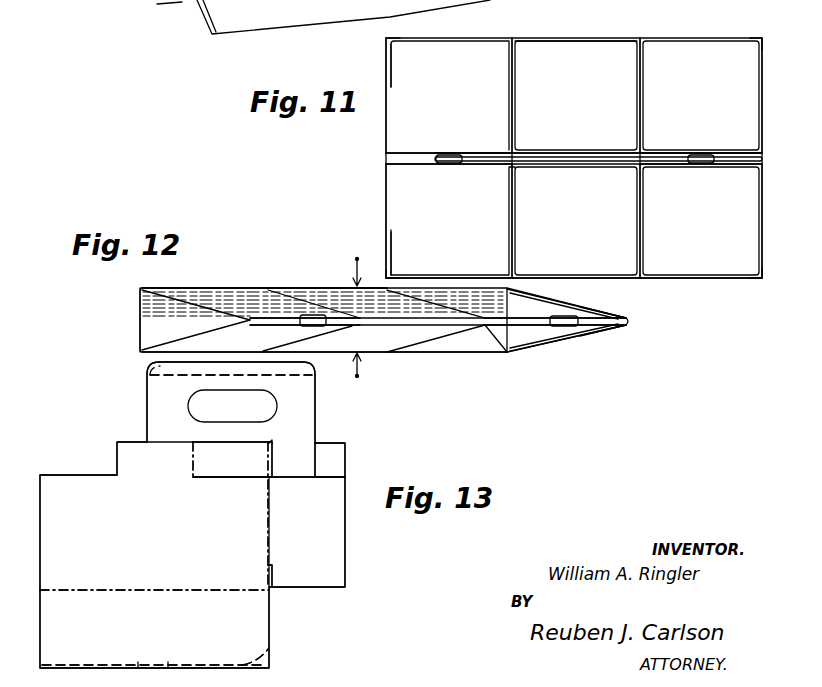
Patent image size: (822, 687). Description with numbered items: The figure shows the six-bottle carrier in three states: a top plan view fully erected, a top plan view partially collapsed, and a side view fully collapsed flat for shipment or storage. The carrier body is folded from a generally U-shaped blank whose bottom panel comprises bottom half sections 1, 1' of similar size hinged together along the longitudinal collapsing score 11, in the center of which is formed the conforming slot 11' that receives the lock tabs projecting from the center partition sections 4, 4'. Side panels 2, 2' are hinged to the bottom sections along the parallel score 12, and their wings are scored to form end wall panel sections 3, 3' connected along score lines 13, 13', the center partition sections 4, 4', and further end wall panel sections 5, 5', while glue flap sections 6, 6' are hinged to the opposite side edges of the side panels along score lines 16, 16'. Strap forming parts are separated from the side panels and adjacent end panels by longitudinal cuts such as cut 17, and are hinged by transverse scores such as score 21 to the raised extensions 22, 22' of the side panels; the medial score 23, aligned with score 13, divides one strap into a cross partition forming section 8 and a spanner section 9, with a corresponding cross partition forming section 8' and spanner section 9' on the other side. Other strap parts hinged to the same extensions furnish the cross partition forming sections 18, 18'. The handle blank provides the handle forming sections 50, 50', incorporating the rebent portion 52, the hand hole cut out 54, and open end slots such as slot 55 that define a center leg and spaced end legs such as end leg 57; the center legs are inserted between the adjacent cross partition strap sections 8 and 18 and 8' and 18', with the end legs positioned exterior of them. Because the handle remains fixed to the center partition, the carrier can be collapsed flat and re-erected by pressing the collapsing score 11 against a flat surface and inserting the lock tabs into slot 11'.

In FIG. 11, the bottom half section 1 is at (574, 276).
In FIG. 12, the bottom half section 1 is at (447, 367).
In FIG. 13, the bottom half section 1 is at (154, 629).
In FIG. 11, the bottom half section 1' is at (576, 78).
In FIG. 12, the bottom half section 1' is at (264, 275).
In FIG. 11, the side panel 2 is at (575, 221).
In FIG. 12, the side panel 2 is at (324, 354).
In FIG. 13, the side panel 2 is at (154, 532).
In FIG. 11, the side panel 2' is at (575, 79).
In FIG. 12, the side panel 2' is at (205, 276).
In FIG. 11, the end wall panel section 3 is at (770, 221).
In FIG. 12, the end wall panel section 3 is at (566, 350).
In FIG. 13, the end wall panel section 3 is at (307, 532).
In FIG. 11, the end wall panel section 3' is at (772, 95).
In FIG. 12, the end wall panel section 3' is at (566, 303).
In FIG. 11, the center partition section 4 is at (449, 178).
In FIG. 12, the center partition section 4 is at (304, 335).
In FIG. 11, the center partition section 4' is at (449, 138).
In FIG. 12, the center partition section 4' is at (305, 291).
In FIG. 11, the end wall panel section 5 is at (371, 221).
In FIG. 12, the end wall panel section 5 is at (147, 336).
In FIG. 11, the end wall panel section 5' is at (372, 95).
In FIG. 12, the end wall panel section 5' is at (126, 304).
In FIG. 11, the glue flap section 6 is at (406, 252).
In FIG. 12, the glue flap section 6 is at (196, 335).
In FIG. 11, the glue flap section 6' is at (408, 65).
In FIG. 12, the glue flap section 6' is at (196, 292).
In FIG. 11, the cross partition forming section 8 is at (653, 221).
In FIG. 12, the cross partition forming section 8 is at (436, 357).
In FIG. 13, the cross partition forming section 8 is at (232, 452).
In FIG. 11, the cross partition forming section 8' is at (657, 95).
In FIG. 12, the cross partition forming section 8' is at (423, 291).
In FIG. 11, the spanner section 9 is at (701, 179).
In FIG. 12, the spanner section 9 is at (603, 343).
In FIG. 13, the spanner section 9 is at (343, 460).
In FIG. 11, the spanner section 9' is at (701, 135).
In FIG. 12, the spanner section 9' is at (606, 308).
In FIG. 13, the collapsing score 11 is at (274, 650).
In FIG. 13, the slot 11' is at (154, 652).
In FIG. 13, the score 12 is at (101, 590).
In FIG. 11, the score line 13 is at (761, 291).
In FIG. 13, the score line 13 is at (284, 587).
In FIG. 11, the score line 13' is at (762, 29).
In FIG. 11, the score line 16 is at (402, 264).
In FIG. 11, the score line 16' is at (403, 28).
In FIG. 13, the longitudinally extending cut 17 is at (238, 477).
In FIG. 11, the cross partition forming section 18 is at (496, 221).
In FIG. 12, the cross partition forming section 18 is at (314, 338).
In FIG. 11, the cross partition forming section 18' is at (496, 95).
In FIG. 12, the cross partition forming section 18' is at (314, 289).
In FIG. 13, the transverse score 21 is at (192, 458).
In FIG. 11, the raised extension 22 is at (576, 221).
In FIG. 12, the raised extension 22 is at (327, 368).
In FIG. 13, the raised extension 22 is at (128, 446).
In FIG. 11, the raised extension 22' is at (576, 53).
In FIG. 12, the raised extension 22' is at (327, 278).
In FIG. 13, the medial score 23 is at (267, 463).
In FIG. 11, the handle forming section 50 is at (598, 177).
In FIG. 12, the handle forming section 50 is at (555, 335).
In FIG. 13, the handle forming section 50 is at (248, 419).
In FIG. 11, the handle forming section 50' is at (598, 138).
In FIG. 12, the handle forming section 50' is at (555, 311).
In FIG. 13, the rebent portion 52 is at (148, 379).
In FIG. 13, the hand hole cut out 54 is at (190, 403).
In FIG. 13, the open end slot 55 is at (269, 441).
In FIG. 13, the end leg 57 is at (305, 460).